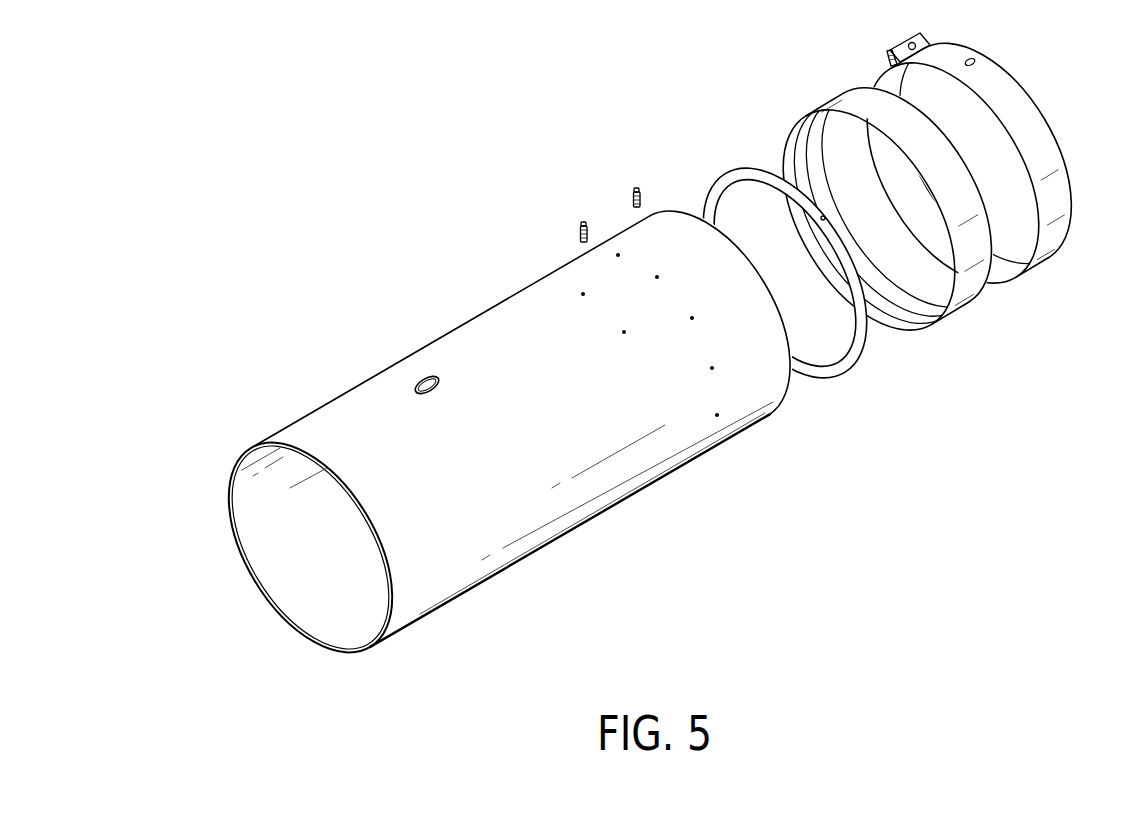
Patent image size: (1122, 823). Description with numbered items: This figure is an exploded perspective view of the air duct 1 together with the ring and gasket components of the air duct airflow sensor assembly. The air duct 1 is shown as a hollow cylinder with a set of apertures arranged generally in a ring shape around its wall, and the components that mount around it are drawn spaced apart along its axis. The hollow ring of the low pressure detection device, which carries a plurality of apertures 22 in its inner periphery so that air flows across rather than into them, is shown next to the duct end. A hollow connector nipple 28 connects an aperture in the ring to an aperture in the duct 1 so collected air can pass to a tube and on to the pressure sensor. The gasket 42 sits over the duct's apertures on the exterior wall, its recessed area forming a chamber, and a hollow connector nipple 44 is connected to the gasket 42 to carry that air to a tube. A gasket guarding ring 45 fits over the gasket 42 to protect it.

The air duct 1 is at (378, 330).
The apertures 22 is at (847, 355).
The hollow connector nipple 28 is at (582, 223).
The gasket 42 is at (967, 297).
The hollow connector nipple 44 is at (633, 191).
The gasket guarding ring 45 is at (1052, 243).